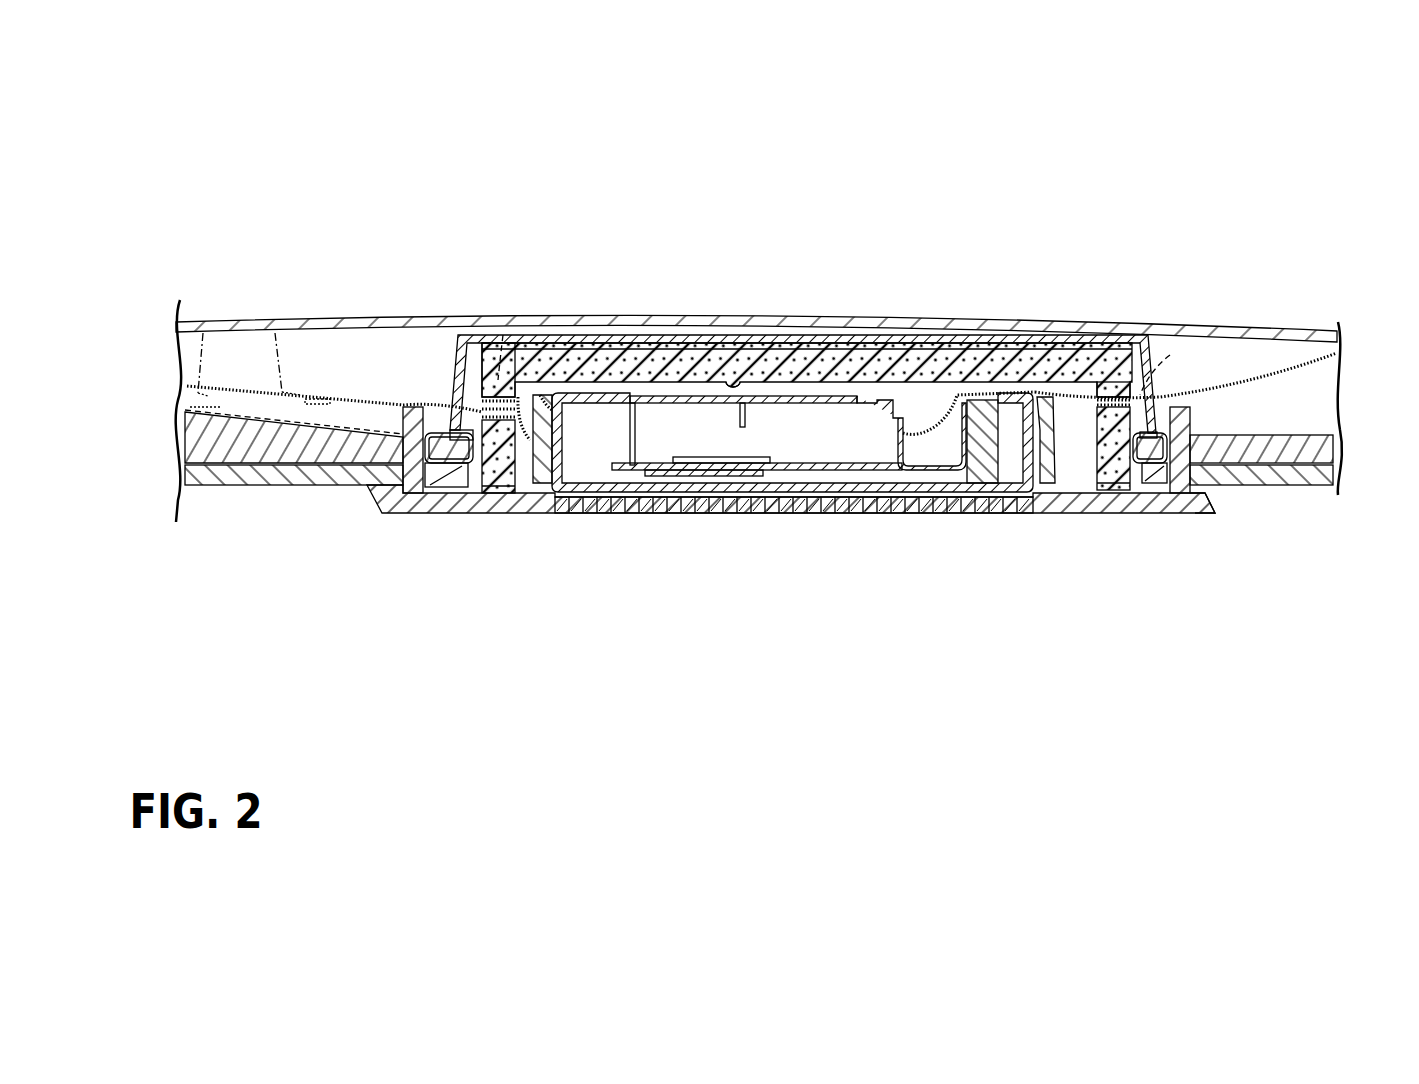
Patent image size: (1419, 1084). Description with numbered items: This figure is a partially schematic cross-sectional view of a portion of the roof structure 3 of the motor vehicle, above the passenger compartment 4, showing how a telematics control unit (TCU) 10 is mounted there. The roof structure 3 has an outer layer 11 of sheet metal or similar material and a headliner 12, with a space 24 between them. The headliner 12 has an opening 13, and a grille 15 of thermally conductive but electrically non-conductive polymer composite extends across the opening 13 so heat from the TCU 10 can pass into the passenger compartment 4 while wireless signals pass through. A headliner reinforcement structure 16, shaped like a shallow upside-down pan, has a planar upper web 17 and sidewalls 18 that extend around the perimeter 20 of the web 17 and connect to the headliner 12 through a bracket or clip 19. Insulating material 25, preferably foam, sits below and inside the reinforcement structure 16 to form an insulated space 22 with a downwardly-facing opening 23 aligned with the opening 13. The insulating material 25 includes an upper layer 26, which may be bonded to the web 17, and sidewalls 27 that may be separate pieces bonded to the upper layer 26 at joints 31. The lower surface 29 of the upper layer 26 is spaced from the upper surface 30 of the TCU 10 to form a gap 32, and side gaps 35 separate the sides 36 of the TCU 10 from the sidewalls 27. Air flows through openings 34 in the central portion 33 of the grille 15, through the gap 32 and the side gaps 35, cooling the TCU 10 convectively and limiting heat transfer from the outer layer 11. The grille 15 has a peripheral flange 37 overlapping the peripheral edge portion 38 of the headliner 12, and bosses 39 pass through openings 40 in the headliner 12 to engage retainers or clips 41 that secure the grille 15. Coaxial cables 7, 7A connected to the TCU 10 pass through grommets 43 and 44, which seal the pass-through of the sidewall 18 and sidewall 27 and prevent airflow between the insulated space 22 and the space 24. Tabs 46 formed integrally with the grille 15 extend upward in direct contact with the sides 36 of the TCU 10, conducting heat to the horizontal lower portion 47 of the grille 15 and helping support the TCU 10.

The roof structure 3 is at (285, 313).
The passenger compartment 4 is at (784, 576).
The coaxial cable 7 is at (187, 404).
The coaxial cable 7A is at (1310, 362).
The telematics control unit 10 is at (602, 418).
The outer layer 11 is at (233, 322).
The headliner 12 is at (767, 484).
The opening 13 is at (418, 490).
The grille 15 is at (518, 528).
The headliner reinforcement structure 16 is at (482, 430).
The planar upper web 17 is at (480, 395).
The sidewall 18 is at (480, 392).
The bracket or clip 19 is at (447, 470).
The perimeter 20 is at (441, 350).
The insulated space 22 is at (915, 418).
The downwardly-facing opening 23 is at (1100, 472).
The space 24 is at (284, 360).
The insulating material 25 is at (978, 392).
The upper layer 26 is at (1012, 395).
The sidewall 27 is at (493, 473).
The lower surface 29 is at (742, 383).
The upper surface 30 is at (660, 396).
The joint 31 is at (503, 335).
The gap 32 is at (698, 396).
The central portion 33 is at (700, 471).
The openings 34 is at (617, 455).
The side gap 35 is at (532, 390).
The side 36 is at (1052, 425).
The peripheral flange 37 is at (1187, 513).
The peripheral edge portion 38 is at (1178, 482).
The boss 39 is at (372, 475).
The opening 40 is at (423, 480).
The retainer or clip 41 is at (278, 488).
The grommet 43 is at (450, 410).
The grommet 44 is at (455, 395).
The tab 46 is at (550, 395).
The horizontal lower portion 47 is at (1048, 495).